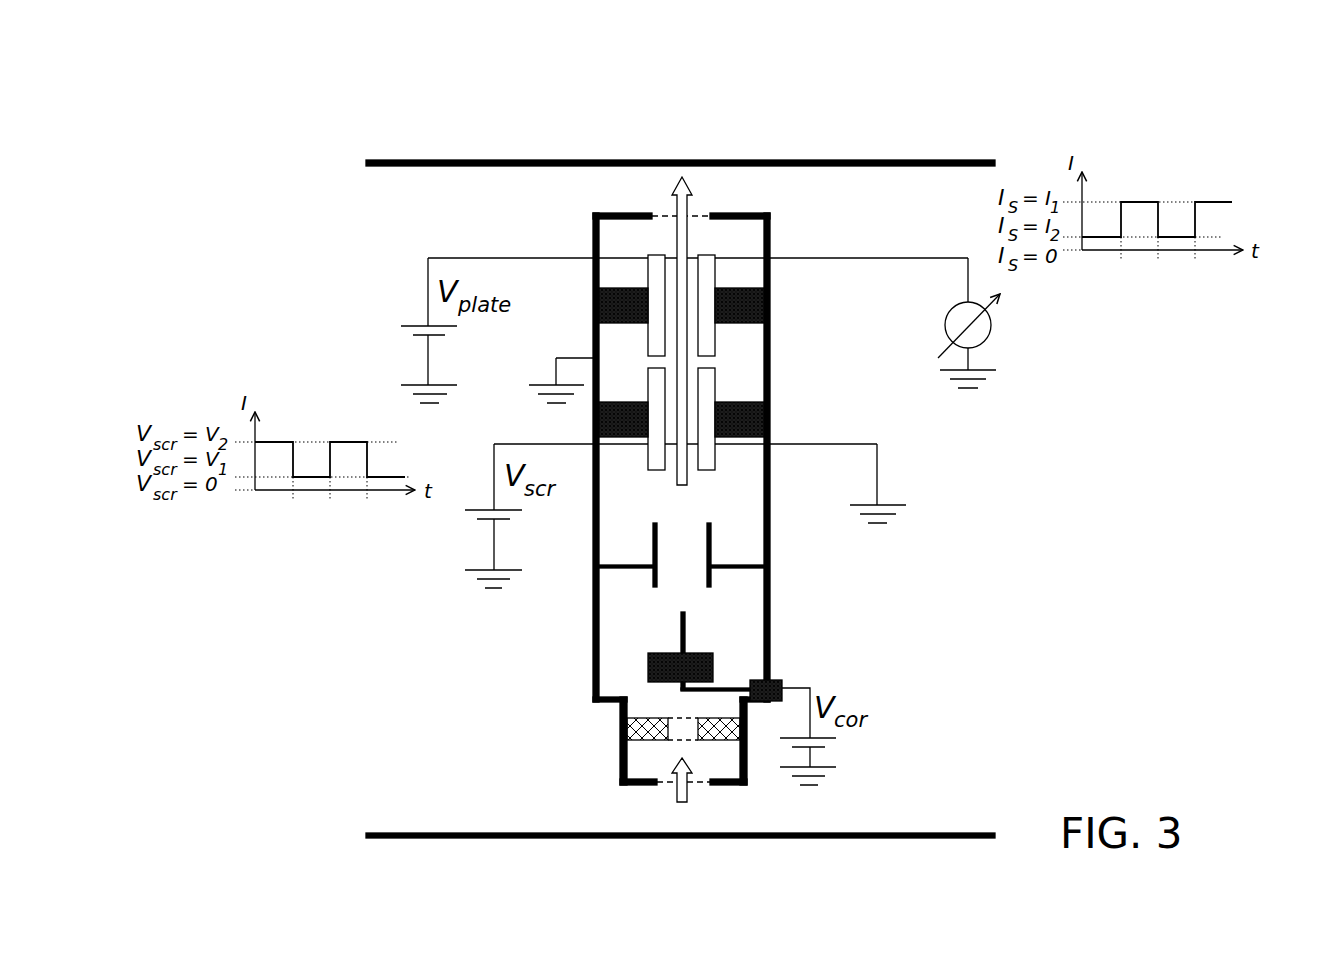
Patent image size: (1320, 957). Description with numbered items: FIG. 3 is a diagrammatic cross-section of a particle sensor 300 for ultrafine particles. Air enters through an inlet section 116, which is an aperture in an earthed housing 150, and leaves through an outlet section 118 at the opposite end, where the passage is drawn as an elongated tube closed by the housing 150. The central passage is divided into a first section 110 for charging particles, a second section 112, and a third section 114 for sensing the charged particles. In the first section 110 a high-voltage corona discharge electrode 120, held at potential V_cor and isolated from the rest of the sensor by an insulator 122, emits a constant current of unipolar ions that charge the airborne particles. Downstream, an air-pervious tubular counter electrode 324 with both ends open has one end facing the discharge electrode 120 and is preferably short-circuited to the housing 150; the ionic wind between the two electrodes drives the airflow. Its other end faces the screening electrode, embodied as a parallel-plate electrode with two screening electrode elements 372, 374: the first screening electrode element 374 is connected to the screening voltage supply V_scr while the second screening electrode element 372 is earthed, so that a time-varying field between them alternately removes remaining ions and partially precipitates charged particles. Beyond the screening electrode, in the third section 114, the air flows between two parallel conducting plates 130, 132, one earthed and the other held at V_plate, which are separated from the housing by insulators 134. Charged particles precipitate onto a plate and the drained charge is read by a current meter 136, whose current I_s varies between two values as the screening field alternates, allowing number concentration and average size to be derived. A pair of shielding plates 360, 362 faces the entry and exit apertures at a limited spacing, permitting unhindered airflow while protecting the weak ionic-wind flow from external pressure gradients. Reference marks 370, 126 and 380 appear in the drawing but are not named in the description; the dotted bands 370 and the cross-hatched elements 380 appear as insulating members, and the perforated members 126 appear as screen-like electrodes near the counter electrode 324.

The particle sensor 300 is at (378, 95).
The shielding plate 360 is at (418, 166).
The shielding plate 362 is at (453, 833).
The second section 112 is at (746, 496).
The outlet section 118 is at (660, 211).
The conducting plate 130 is at (643, 273).
The conducting plate 132 is at (719, 273).
The third section 114 is at (746, 375).
The insulator 134 is at (611, 303).
The lower insulating rings 370 is at (597, 413).
The first screening electrode element 374 is at (644, 379).
The second screening electrode element 372 is at (723, 372).
The screen electrodes 126 is at (630, 575).
The tubular counter electrode 324 is at (715, 580).
The housing 150 is at (773, 593).
The first section 110 is at (739, 633).
The corona discharge electrode 120 is at (691, 638).
The insulator 122 is at (721, 667).
The insulating feedthrough 380 is at (678, 727).
The inlet section 116 is at (670, 781).
The current meter 136 is at (1000, 324).